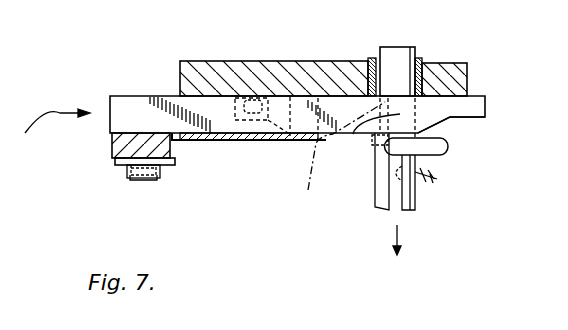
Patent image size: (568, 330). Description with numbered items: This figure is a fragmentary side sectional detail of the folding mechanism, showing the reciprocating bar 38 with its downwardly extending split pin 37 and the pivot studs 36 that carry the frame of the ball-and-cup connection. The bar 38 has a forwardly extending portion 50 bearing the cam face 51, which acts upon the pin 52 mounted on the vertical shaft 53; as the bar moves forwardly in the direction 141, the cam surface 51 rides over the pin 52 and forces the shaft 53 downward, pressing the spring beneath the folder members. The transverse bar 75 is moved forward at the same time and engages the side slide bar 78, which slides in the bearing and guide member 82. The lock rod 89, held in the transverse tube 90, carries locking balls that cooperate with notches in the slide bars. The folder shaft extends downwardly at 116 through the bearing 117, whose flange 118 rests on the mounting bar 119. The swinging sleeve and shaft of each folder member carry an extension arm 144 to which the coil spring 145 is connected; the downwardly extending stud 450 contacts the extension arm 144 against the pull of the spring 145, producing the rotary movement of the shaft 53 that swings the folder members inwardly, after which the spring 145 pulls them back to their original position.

The reciprocating bar 38 is at (110, 106).
The direction 141 is at (46, 136).
The transverse bar 75 is at (113, 145).
The pivot studs 36 is at (130, 181).
The split pin 37 is at (162, 168).
The bearing and guide member 82 is at (242, 141).
The mounting bar 119 is at (242, 70).
The lock rod 89 is at (254, 100).
The transverse tube 90 is at (290, 140).
The side slide bar 78 is at (348, 117).
The downward extension of shaft 116 is at (397, 57).
The flange 118 is at (423, 62).
The bearing 117 is at (437, 78).
The cam face 51 is at (442, 124).
The pin 52 is at (447, 144).
The forwardly extending portion 50 is at (341, 133).
The downwardly extending stud 450 is at (334, 159).
The vertical shaft 53 is at (374, 191).
The extension arm 144 is at (437, 177).
The coil spring 145 is at (434, 182).